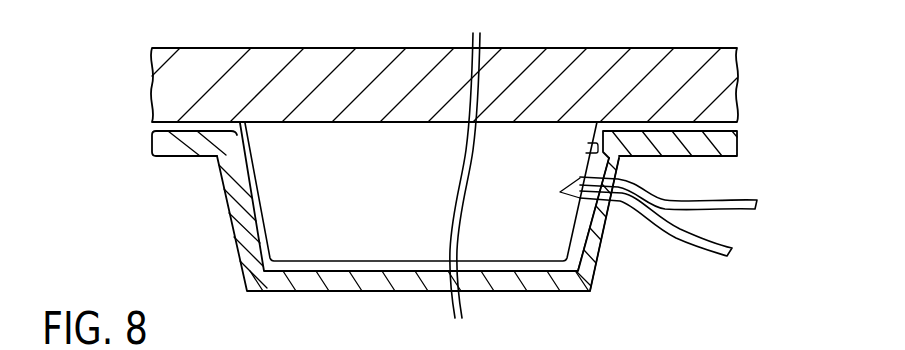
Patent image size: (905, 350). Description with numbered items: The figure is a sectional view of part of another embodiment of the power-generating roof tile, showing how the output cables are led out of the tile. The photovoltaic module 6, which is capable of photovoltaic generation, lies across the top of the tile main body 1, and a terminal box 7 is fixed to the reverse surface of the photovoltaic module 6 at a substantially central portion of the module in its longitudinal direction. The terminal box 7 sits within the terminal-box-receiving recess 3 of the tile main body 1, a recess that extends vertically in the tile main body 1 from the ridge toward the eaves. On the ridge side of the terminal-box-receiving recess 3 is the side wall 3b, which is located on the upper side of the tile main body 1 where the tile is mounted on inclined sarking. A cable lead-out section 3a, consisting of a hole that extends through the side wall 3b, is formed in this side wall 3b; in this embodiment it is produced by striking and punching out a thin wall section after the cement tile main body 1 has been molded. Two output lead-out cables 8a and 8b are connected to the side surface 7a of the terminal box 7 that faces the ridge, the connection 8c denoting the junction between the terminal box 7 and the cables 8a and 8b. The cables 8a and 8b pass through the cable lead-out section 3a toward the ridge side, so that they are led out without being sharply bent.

The tile main body 1 is at (192, 166).
The terminal-box-receiving recess 3 is at (358, 274).
The cable lead-out section 3a is at (618, 173).
The side wall 3b is at (590, 247).
The photovoltaic module 6 is at (650, 58).
The terminal box 7 is at (524, 250).
The side surface 7a is at (588, 149).
The output lead-out cable 8a is at (728, 194).
The output lead-out cable 8b is at (703, 241).
The connection 8c is at (561, 192).